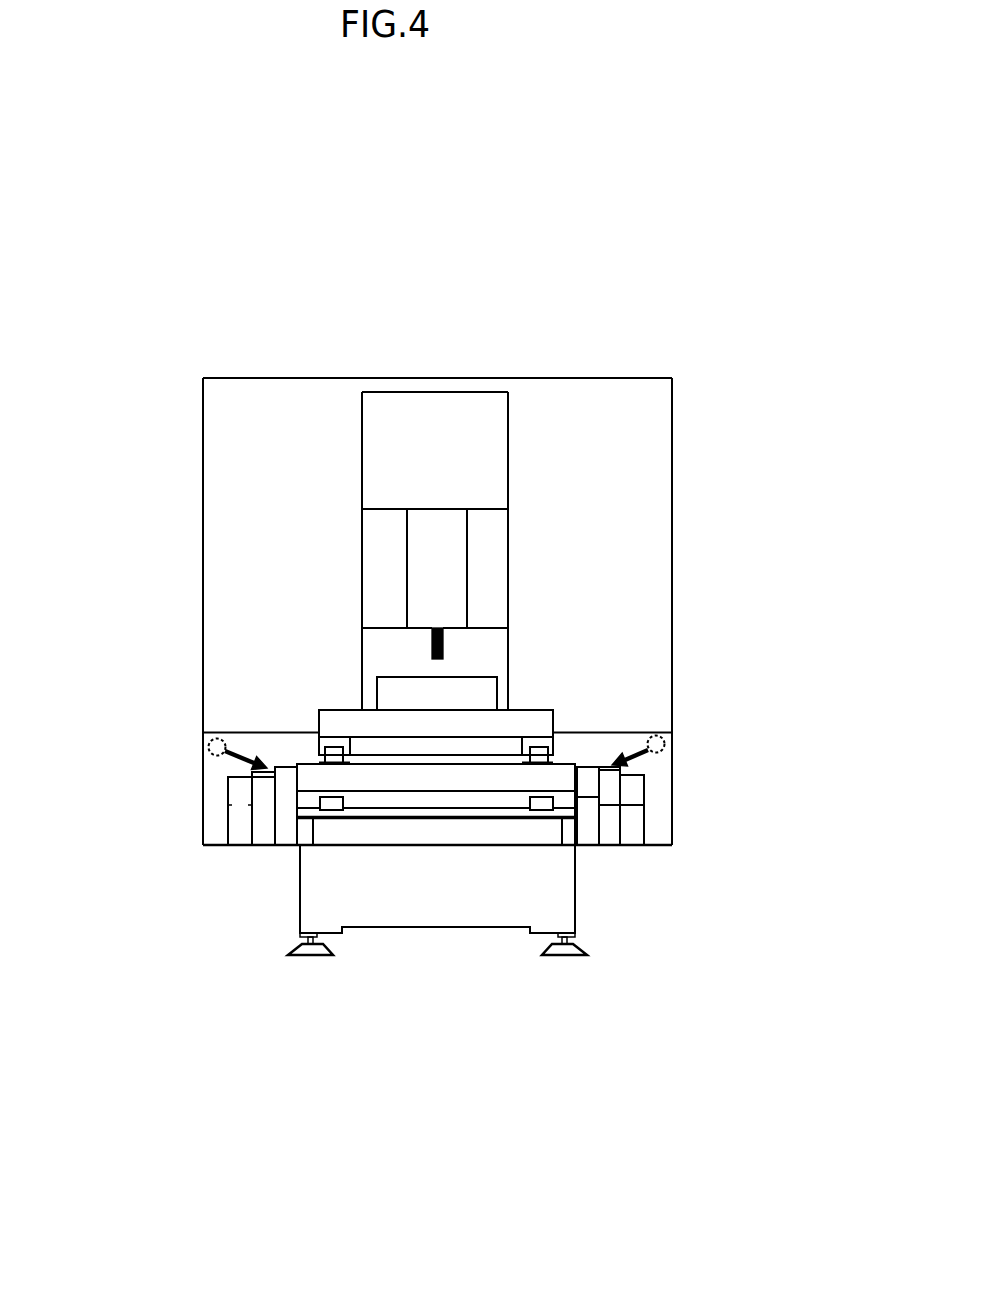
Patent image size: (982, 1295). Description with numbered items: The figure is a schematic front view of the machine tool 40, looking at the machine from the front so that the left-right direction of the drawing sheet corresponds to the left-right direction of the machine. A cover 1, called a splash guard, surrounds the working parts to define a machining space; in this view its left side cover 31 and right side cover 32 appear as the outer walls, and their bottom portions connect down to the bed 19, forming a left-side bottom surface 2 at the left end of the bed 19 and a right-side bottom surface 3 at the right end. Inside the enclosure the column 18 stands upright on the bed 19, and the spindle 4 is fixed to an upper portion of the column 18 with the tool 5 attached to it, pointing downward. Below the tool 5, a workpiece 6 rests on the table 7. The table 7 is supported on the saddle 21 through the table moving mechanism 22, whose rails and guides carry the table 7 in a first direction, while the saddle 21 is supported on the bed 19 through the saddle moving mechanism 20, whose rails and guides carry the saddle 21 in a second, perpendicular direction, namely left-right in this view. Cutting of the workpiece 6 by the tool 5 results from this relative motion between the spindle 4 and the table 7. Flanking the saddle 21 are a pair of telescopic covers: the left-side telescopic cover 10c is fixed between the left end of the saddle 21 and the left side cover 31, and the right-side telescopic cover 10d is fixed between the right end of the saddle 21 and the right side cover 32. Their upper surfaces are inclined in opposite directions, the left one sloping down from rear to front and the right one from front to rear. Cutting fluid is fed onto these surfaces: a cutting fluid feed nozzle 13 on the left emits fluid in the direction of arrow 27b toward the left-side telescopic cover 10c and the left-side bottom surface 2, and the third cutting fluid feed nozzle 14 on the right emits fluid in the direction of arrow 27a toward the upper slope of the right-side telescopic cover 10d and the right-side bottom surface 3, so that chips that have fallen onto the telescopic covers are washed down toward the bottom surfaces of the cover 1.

The machine tool 40 is at (458, 202).
The cover 1 is at (674, 404).
The left side cover 31 is at (202, 447).
The right side cover 32 is at (671, 503).
The spindle 4 is at (428, 533).
The column 18 is at (481, 533).
The tool 5 is at (432, 645).
The workpiece 6 is at (497, 680).
The table 7 is at (542, 715).
The table moving mechanism 22 is at (543, 755).
The saddle 21 is at (453, 780).
The saddle moving mechanism 20 is at (550, 803).
The left-side bottom surface 2 is at (250, 848).
The right-side bottom surface 3 is at (620, 847).
The left-side telescopic cover 10c is at (253, 802).
The right-side telescopic cover 10d is at (602, 815).
The arrow indicating cutting fluid emission direction 27b is at (238, 760).
The arrow indicating cutting fluid emission direction 27a is at (638, 760).
The cutting fluid feed nozzle 13 is at (210, 742).
The third cutting fluid feed nozzle 14 is at (662, 738).
The bed 19 is at (453, 903).